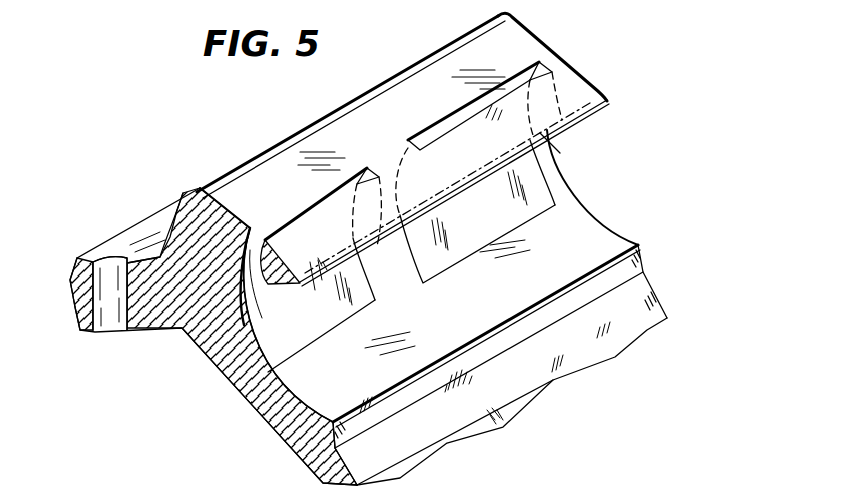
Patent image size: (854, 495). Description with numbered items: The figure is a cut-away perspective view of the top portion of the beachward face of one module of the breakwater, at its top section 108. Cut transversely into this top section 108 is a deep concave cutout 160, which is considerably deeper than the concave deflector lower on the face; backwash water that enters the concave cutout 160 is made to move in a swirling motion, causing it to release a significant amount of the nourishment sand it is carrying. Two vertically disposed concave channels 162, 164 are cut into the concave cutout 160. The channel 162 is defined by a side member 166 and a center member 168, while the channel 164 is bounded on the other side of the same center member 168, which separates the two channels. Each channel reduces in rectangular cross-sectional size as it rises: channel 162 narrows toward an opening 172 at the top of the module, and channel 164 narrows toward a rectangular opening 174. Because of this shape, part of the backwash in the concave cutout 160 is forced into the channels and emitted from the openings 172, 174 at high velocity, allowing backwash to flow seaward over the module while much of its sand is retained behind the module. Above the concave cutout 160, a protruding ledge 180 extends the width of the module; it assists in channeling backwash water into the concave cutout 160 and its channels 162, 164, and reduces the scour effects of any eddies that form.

The top section 108 is at (170, 161).
The concave cutout 160 is at (577, 225).
The concave channel 162 is at (483, 210).
The concave channel 164 is at (305, 310).
The side member 166 is at (557, 152).
The center member 168 is at (395, 275).
The opening 172 is at (445, 118).
The rectangular opening 174 is at (265, 240).
The protruding ledge 180 is at (607, 102).